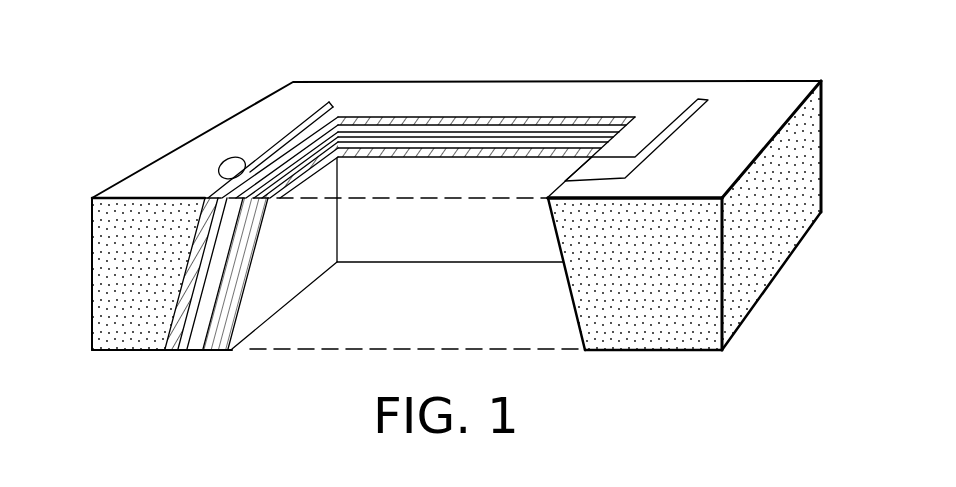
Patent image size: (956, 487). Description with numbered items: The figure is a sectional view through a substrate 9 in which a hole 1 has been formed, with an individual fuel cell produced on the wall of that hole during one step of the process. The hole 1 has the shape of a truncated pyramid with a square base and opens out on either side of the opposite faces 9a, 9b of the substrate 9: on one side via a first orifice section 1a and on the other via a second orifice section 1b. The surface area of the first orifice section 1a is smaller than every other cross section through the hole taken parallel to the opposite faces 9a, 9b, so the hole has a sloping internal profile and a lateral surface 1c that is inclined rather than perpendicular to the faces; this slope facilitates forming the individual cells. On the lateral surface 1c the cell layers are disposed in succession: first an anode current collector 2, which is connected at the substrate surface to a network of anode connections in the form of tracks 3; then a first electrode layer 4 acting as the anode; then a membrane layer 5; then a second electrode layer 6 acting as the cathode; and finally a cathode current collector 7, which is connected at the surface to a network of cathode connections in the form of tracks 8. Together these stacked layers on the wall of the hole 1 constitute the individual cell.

The hole 1 is at (418, 180).
The first orifice section 1a is at (500, 176).
The second orifice section 1b is at (538, 352).
The lateral surface 1c is at (272, 255).
The anode current collector 2 is at (190, 264).
The tracks 3 is at (231, 170).
The first electrode layer 4 is at (173, 349).
The membrane layer 5 is at (188, 349).
The second electrode layer 6 is at (207, 349).
The cathode current collector 7 is at (226, 349).
The tracks 8 is at (606, 164).
The substrate 9 is at (758, 279).
The opposite face 9a is at (740, 120).
The opposite face 9b is at (672, 349).